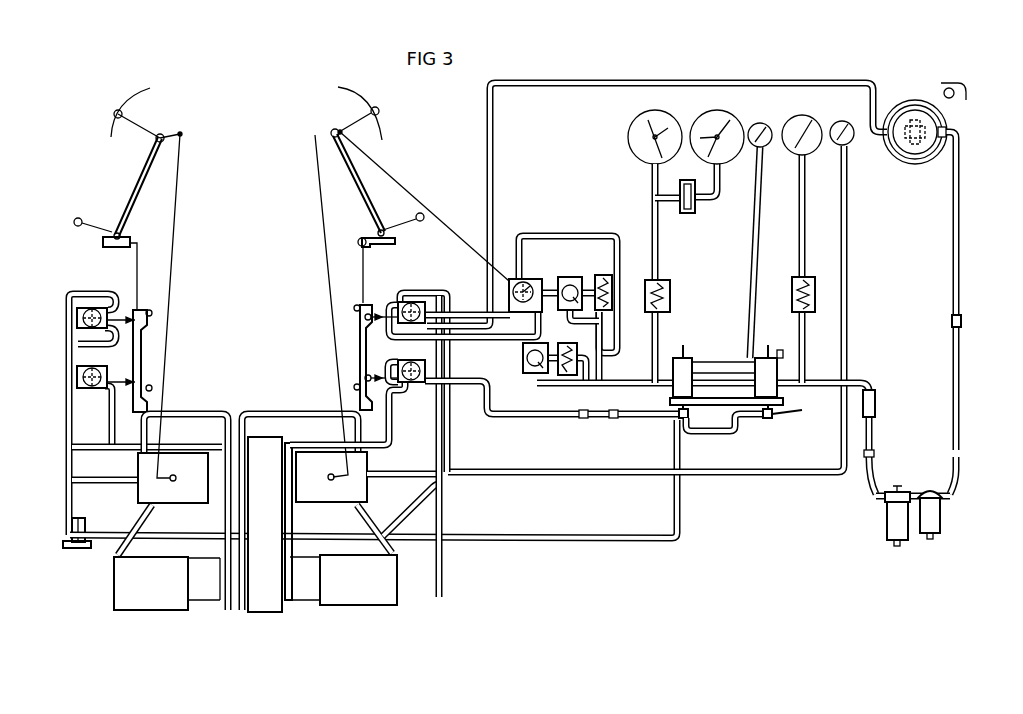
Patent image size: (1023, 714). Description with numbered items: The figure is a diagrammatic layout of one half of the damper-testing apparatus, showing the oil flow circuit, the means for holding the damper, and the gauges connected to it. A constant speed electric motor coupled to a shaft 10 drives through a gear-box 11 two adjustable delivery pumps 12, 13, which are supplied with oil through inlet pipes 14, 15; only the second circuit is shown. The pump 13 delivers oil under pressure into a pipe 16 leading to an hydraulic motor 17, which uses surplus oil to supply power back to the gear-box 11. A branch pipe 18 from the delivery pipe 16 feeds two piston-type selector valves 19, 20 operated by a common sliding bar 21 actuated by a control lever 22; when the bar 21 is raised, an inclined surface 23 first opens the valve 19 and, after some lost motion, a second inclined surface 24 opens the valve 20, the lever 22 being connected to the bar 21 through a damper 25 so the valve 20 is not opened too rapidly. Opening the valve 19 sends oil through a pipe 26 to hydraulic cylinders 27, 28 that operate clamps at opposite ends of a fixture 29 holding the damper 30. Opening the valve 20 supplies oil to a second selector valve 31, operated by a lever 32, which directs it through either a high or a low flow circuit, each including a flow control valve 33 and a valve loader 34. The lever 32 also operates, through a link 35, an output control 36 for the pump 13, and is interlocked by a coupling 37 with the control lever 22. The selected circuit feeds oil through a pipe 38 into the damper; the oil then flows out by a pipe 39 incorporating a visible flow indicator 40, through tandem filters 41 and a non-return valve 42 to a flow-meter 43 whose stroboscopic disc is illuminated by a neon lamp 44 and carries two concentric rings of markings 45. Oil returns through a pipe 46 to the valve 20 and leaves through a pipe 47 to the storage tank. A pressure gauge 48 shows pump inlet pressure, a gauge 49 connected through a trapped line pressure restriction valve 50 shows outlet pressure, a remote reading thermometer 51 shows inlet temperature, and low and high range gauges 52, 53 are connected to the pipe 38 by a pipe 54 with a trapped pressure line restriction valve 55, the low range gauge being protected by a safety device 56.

The shaft 10 is at (95, 548).
The gear-box 11 is at (262, 520).
The adjustable delivery pump 12 is at (150, 493).
The adjustable delivery pump 13 is at (350, 493).
The inlet pipe 14 is at (195, 411).
The inlet pipe 15 is at (292, 411).
The delivery pipe 16 is at (372, 520).
The hydraulic motor 17 is at (360, 590).
The branch pipe 18 is at (443, 450).
The piston-type selector valve 19 is at (427, 384).
The piston-type selector valve 20 is at (414, 303).
The sliding bar 21 is at (360, 340).
The control lever 22 is at (400, 221).
The inclined surface 23 is at (373, 382).
The inclined surface 24 is at (370, 313).
The damper 25 is at (397, 240).
The pipe 26 is at (529, 420).
The hydraulic cylinder 27 is at (685, 420).
The hydraulic cylinder 28 is at (767, 420).
The fixture 29 is at (683, 360).
The damper 30 is at (728, 361).
The second selector valve 31 is at (523, 281).
The lever 32 is at (345, 128).
The flow control valve 33 is at (570, 284).
The valve loader 34 is at (606, 276).
The link 35 is at (330, 303).
The output control 36 is at (375, 471).
The coupling 37 is at (360, 192).
The pipe 38 is at (633, 384).
The pipe 39 is at (820, 379).
The visible flow indicator 40 is at (877, 405).
The tandem filters 41 is at (925, 525).
The non-return valve 42 is at (962, 320).
The flow-meter 43 is at (898, 102).
The neon lamp 44 is at (950, 83).
The rings of markings 45 is at (947, 127).
The pipe 46 is at (486, 195).
The pipe 47 is at (451, 358).
The pressure gauge 48 is at (845, 121).
The gauge 49 is at (808, 115).
The trapped line pressure restriction valve 50 is at (818, 296).
The remote reading thermometer 51 is at (765, 123).
The low range gauge 52 is at (717, 110).
The high range gauge 53 is at (655, 110).
The pipe 54 is at (660, 262).
The trapped pressure line restriction valve 55 is at (670, 298).
The safety device 56 is at (690, 214).